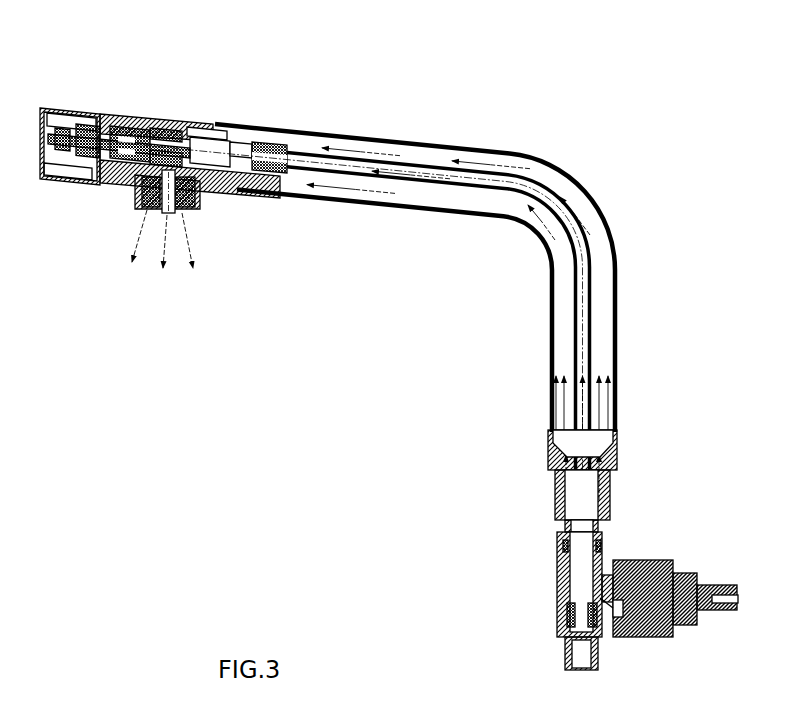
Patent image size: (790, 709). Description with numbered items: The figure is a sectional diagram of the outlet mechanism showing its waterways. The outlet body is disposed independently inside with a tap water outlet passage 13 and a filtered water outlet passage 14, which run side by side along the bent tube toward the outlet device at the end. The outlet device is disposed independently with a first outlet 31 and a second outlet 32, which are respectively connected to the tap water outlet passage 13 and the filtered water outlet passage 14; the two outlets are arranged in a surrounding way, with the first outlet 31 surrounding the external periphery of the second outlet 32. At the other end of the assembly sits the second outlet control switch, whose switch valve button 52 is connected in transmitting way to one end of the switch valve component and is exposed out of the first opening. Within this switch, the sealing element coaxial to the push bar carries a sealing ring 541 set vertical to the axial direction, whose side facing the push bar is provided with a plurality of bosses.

The tap water outlet passage 13 is at (295, 192).
The filtered water outlet passage 14 is at (438, 319).
The first outlet 31 is at (147, 207).
The second outlet 32 is at (167, 210).
The switch valve button 52 is at (62, 120).
The sealing ring 541 is at (185, 150).